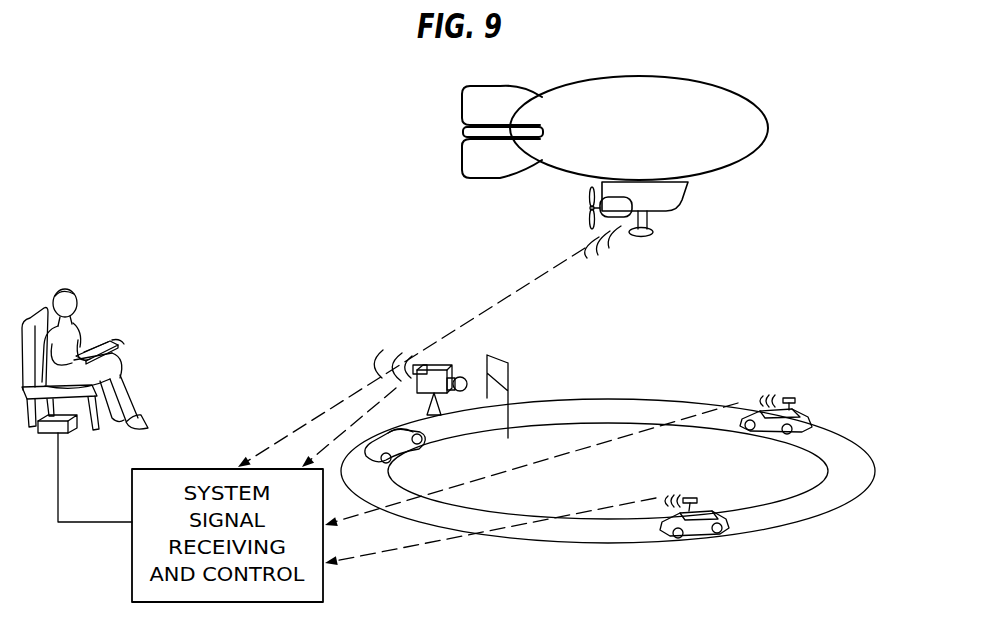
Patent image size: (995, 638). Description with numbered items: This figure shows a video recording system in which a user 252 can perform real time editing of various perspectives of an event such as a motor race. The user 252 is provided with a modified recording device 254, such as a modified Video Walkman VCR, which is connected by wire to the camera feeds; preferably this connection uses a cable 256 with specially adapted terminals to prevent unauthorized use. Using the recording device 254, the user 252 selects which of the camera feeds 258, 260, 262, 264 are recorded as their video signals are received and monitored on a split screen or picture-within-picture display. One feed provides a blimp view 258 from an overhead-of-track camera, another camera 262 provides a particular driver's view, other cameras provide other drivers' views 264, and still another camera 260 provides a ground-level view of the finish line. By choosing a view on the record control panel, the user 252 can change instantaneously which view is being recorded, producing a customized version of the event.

The user 252 is at (67, 290).
The modified recording device 254 is at (98, 340).
The cable 256 is at (123, 344).
The blimp view camera feed 258 is at (653, 235).
The finish line camera 260 is at (463, 374).
The driver's view camera 262 is at (803, 419).
The other drivers' views camera feed 264 is at (705, 528).